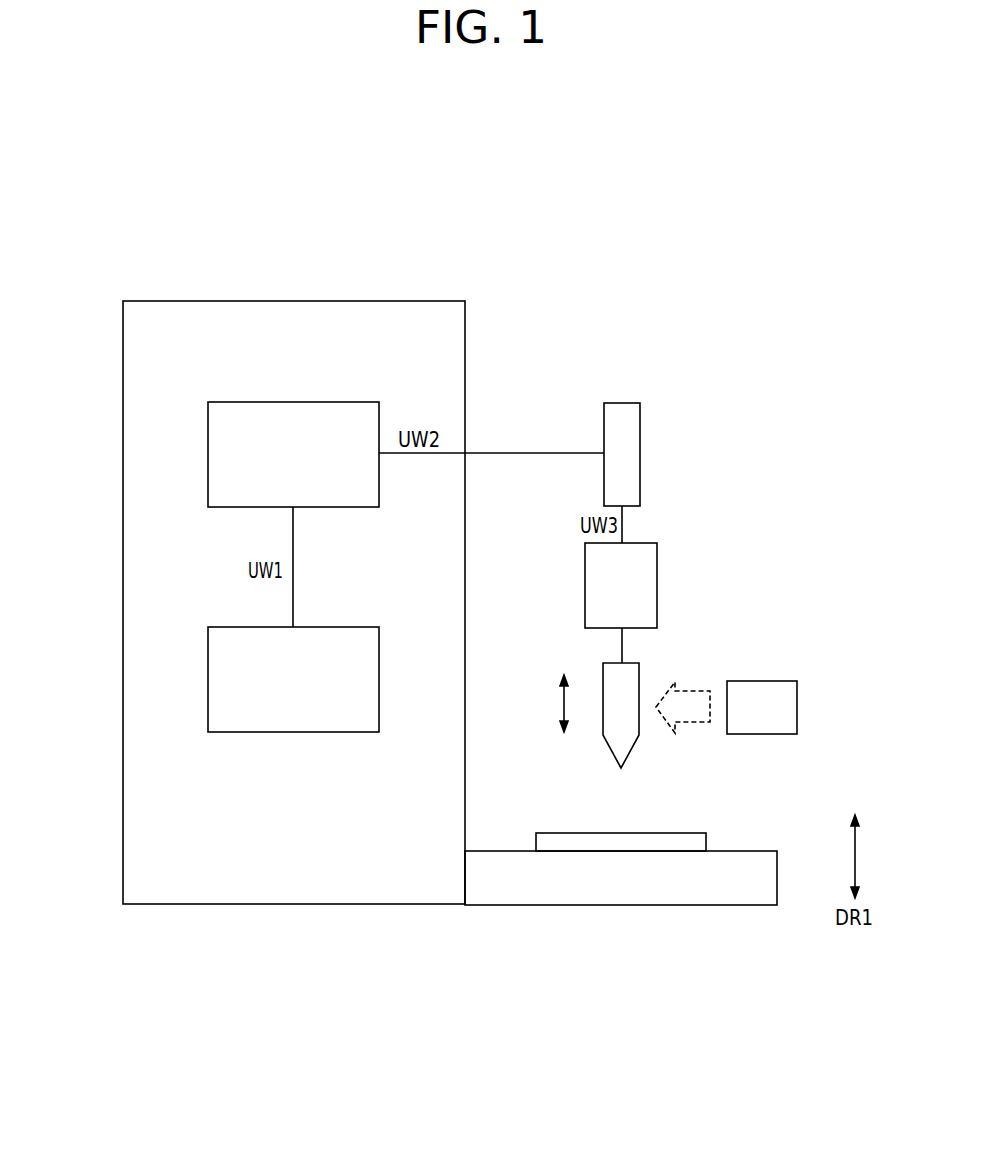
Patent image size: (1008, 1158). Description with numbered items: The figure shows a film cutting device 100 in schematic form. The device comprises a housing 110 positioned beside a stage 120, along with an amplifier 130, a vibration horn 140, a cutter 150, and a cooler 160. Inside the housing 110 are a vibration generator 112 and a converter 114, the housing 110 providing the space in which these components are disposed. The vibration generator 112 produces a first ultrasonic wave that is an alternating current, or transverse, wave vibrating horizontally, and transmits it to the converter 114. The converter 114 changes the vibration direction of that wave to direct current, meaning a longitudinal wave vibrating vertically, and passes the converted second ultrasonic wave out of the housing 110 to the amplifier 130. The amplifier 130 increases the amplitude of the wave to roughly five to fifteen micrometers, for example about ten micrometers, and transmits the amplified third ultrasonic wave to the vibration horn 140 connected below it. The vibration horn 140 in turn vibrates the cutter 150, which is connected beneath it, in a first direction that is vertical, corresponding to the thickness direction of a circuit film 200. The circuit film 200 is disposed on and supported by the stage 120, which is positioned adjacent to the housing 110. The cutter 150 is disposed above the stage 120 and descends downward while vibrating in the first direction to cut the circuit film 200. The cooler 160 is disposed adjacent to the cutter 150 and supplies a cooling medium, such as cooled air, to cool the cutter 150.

The film cutting device 100 is at (732, 228).
The housing 110 is at (293, 885).
The vibration generator 112 is at (220, 690).
The converter 114 is at (220, 462).
The stage 120 is at (575, 885).
The amplifier 130 is at (634, 457).
The vibration horn 140 is at (651, 569).
The cutter 150 is at (633, 679).
The cooler 160 is at (790, 705).
The circuit film 200 is at (666, 843).